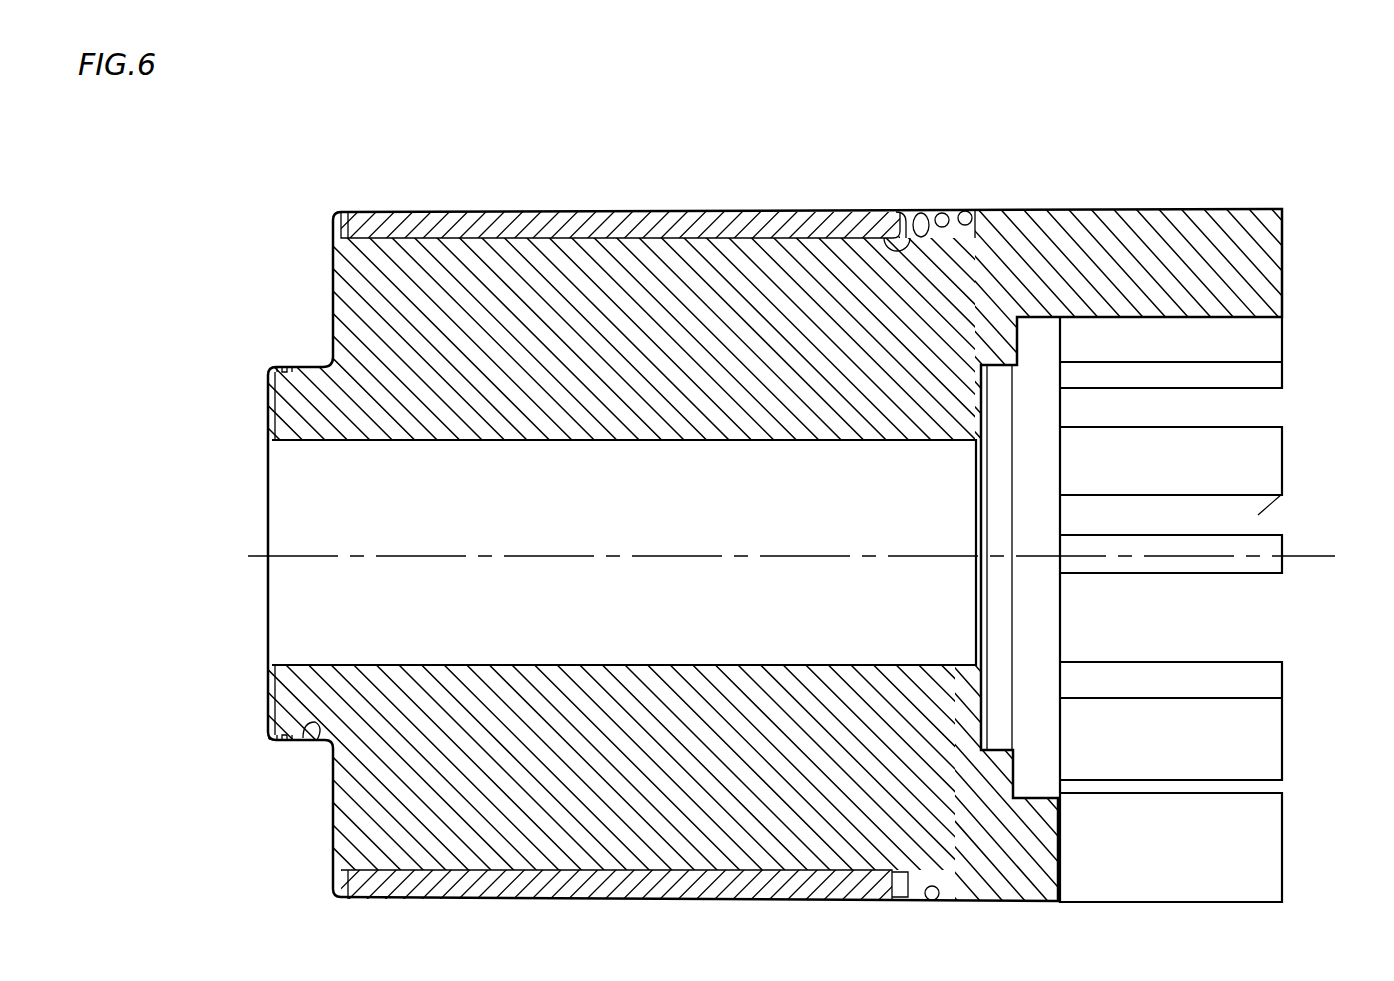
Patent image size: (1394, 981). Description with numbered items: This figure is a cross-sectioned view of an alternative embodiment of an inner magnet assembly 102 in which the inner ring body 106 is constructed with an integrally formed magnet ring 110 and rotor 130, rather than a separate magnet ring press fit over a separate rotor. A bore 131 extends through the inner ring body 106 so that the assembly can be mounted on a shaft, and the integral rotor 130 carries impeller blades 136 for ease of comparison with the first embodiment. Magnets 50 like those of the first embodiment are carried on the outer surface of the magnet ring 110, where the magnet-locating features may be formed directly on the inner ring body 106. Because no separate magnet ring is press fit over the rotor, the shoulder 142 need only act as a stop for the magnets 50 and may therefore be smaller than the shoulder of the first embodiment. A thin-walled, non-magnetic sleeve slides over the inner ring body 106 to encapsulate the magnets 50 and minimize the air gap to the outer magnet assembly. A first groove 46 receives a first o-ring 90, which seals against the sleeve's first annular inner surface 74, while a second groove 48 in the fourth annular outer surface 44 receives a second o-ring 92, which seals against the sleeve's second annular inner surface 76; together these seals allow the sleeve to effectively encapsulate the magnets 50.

The inner magnet assembly 102 is at (269, 208).
The inner ring body 106 is at (333, 299).
The first groove 46 is at (268, 378).
The first o-ring 90 is at (288, 365).
The bore 131 is at (313, 442).
The magnet ring 110 is at (512, 232).
The magnets 50 is at (652, 235).
The shoulder 142 is at (830, 210).
The second annular inner surface 76 is at (884, 210).
The second groove 48 is at (908, 210).
The second o-ring 92 is at (935, 210).
The fourth annular outer surface 44 is at (972, 210).
The rotor 130 is at (1075, 211).
The impeller blades 136 is at (1282, 494).
The first annular inner surface 74 is at (312, 745).